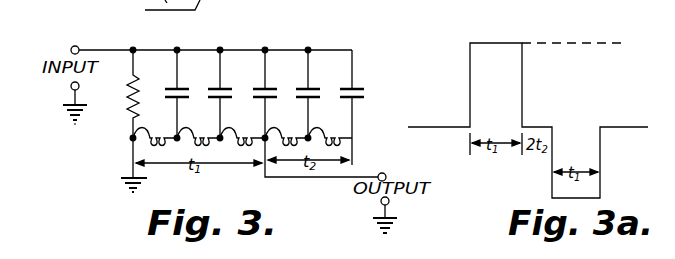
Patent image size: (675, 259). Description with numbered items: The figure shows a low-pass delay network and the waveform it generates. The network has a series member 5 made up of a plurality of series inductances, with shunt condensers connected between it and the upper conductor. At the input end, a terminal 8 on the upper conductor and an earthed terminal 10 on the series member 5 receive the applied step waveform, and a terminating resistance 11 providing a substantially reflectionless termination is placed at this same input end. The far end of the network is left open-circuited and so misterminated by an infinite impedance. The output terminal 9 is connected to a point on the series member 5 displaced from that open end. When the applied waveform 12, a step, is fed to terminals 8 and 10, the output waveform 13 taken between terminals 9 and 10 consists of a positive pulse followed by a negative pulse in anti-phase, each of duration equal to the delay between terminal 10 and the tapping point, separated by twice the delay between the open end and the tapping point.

In FIG. 3, the terminal 8 is at (135, 47).
In FIG. 3, the terminating resistance 11 is at (128, 99).
In FIG. 3, the terminal 10 is at (128, 139).
In FIG. 3, the series member 5 is at (245, 134).
In FIG. 3, the terminal 9 is at (268, 134).
In FIG. 3A, the applied waveform 12 is at (458, 129).
In FIG. 3A, the output waveform 13 is at (580, 198).